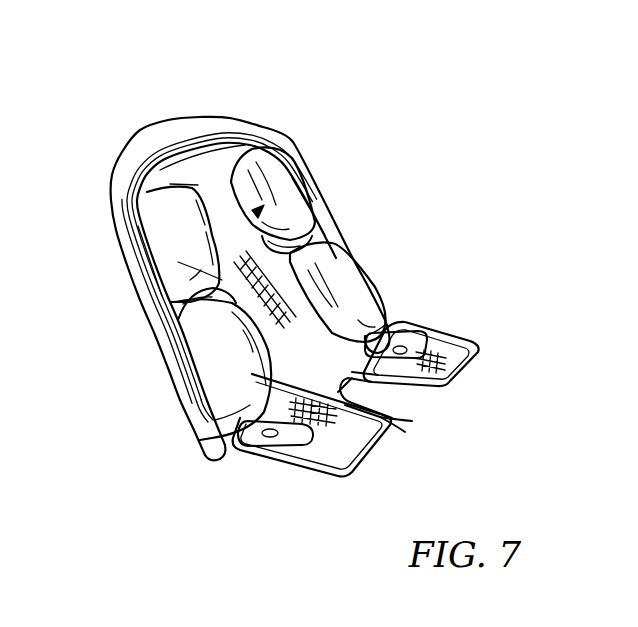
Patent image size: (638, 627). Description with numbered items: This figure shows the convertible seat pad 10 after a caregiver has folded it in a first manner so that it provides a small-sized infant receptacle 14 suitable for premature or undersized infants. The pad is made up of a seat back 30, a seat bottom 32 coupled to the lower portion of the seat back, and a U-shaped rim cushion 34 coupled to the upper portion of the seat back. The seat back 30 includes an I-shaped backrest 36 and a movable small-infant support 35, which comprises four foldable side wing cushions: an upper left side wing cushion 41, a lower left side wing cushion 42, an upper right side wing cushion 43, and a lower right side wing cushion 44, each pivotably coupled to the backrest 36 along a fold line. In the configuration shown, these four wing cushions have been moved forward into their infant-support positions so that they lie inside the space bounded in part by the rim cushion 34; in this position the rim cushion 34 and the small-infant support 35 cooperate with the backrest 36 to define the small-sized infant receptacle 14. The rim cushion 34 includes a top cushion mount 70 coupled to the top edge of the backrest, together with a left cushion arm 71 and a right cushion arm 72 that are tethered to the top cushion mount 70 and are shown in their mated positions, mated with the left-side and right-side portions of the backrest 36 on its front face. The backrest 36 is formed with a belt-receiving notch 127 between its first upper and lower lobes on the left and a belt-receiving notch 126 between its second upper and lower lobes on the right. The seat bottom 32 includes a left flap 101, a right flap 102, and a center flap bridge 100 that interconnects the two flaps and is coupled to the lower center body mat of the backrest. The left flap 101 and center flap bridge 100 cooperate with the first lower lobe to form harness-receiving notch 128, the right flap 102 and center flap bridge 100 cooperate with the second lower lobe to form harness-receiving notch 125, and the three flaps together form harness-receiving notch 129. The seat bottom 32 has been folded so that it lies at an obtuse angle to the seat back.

The convertible seat pad 10 is at (313, 95).
The small-sized infant receptacle 14 is at (208, 180).
The seat back 30 is at (510, 358).
The seat bottom 32 is at (396, 290).
The rim cushion 34 is at (98, 186).
The small-infant support 35 is at (325, 323).
The backrest 36 is at (168, 181).
The upper left side wing cushion 41 is at (153, 228).
The lower left side wing cushion 42 is at (212, 372).
The upper right side wing cushion 43 is at (280, 175).
The lower right side wing cushion 44 is at (356, 273).
The top cushion mount 70 is at (228, 125).
The left cushion arm 71 is at (143, 282).
The right cushion arm 72 is at (318, 213).
The center flap bridge 100 is at (412, 421).
The left flap 101 is at (342, 455).
The right flap 102 is at (443, 343).
The harness-receiving notch 125 is at (412, 337).
The belt-receiving notch 126 is at (268, 209).
The belt-receiving notch 127 is at (187, 300).
The harness-receiving notch 128 is at (243, 460).
The harness-receiving notch 129 is at (405, 432).